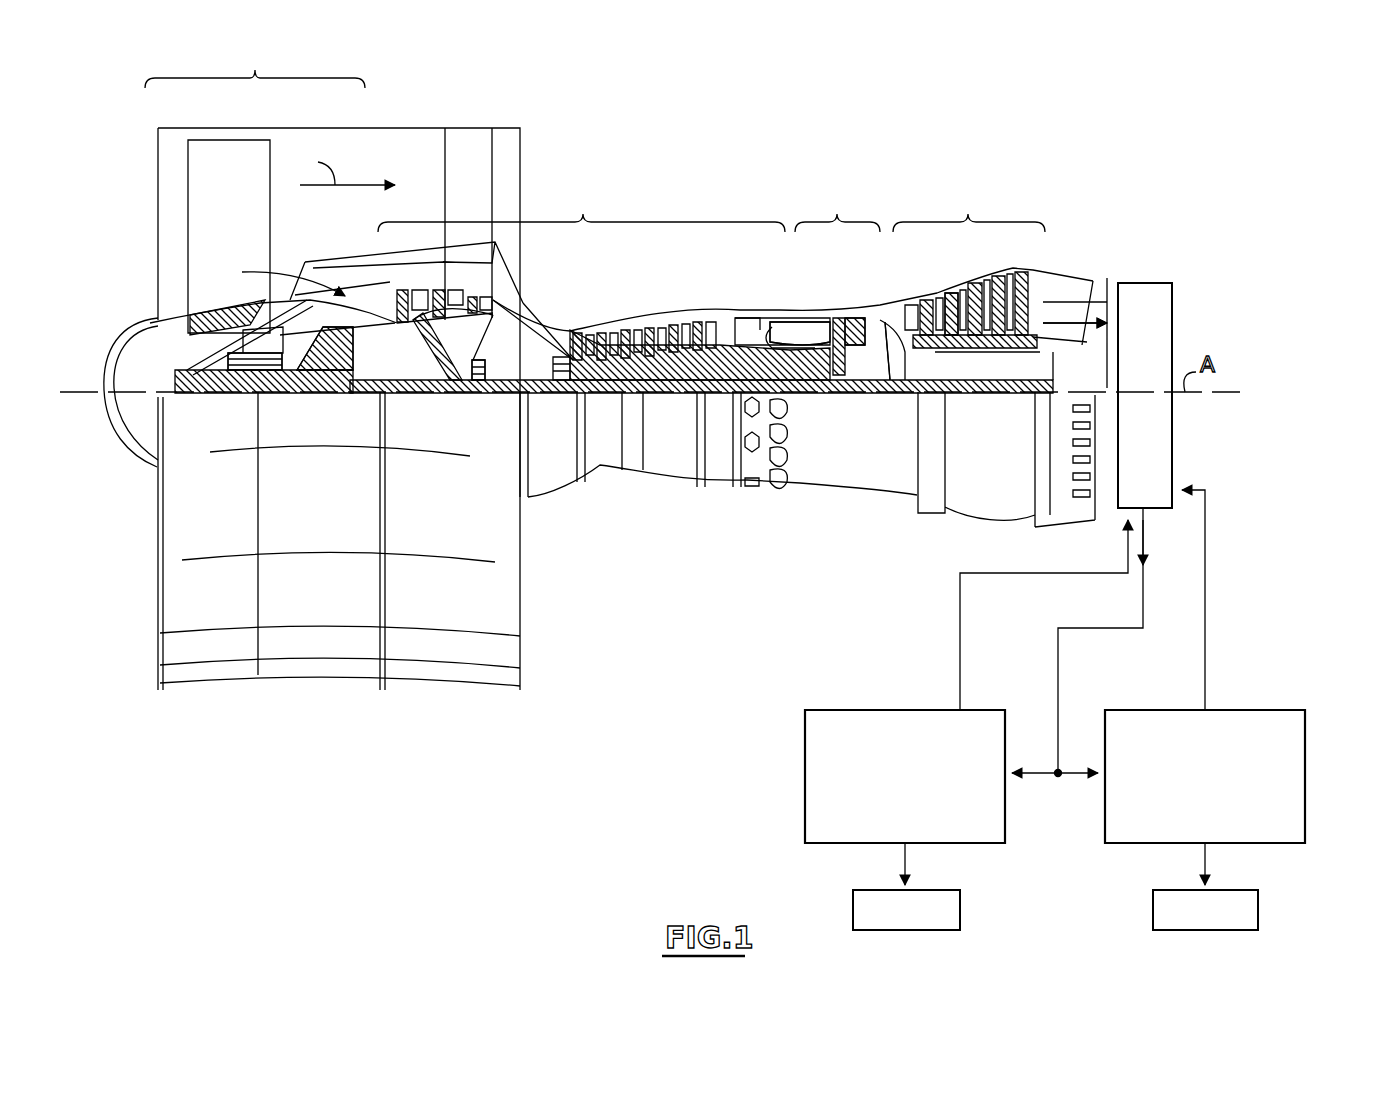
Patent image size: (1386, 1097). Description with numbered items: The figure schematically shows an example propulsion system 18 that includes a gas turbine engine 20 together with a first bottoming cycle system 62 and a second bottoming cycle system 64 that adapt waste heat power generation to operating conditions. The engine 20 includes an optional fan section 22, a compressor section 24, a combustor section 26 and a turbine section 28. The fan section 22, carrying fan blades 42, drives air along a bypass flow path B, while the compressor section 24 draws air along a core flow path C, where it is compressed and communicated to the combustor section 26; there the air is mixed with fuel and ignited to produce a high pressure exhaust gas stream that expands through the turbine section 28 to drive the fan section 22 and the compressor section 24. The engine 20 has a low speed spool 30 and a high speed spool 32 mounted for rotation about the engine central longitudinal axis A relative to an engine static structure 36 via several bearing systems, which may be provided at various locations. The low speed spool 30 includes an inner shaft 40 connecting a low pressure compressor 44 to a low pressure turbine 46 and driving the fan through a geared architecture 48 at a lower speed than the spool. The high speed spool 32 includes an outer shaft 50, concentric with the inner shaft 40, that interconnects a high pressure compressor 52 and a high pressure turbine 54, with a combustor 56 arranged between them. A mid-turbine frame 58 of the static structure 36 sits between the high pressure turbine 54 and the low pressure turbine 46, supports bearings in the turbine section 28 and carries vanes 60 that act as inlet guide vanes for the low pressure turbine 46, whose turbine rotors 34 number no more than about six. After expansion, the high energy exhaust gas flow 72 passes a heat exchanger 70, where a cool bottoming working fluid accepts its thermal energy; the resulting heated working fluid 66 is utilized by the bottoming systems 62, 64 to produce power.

The propulsion system 18 is at (525, 770).
The gas turbine engine 20 is at (800, 160).
The fan section 22 is at (255, 65).
The compressor section 24 is at (581, 209).
The combustor section 26 is at (837, 209).
The turbine section 28 is at (969, 209).
The low speed spool 30 is at (676, 400).
The high speed spool 32 is at (722, 345).
The turbine rotors 34 is at (1000, 370).
The engine static structure 36 is at (715, 482).
The inner shaft 40 is at (530, 420).
The fan blades 42 is at (240, 240).
The low pressure compressor section 44 is at (455, 290).
The low pressure turbine section 46 is at (990, 290).
The geared architecture 48 is at (345, 377).
The outer shaft 50 is at (800, 385).
The high pressure compressor section 52 is at (635, 330).
The high pressure turbine section 54 is at (860, 320).
The combustor 56 is at (785, 332).
The mid-turbine frame 58 is at (900, 305).
The vanes 60 is at (917, 353).
The first bottoming cycle system 62 is at (805, 770).
The second bottoming cycle system 64 is at (1305, 748).
The heated working fluid 66 is at (1060, 680).
The heat exchanger 70 is at (1153, 298).
The high energy exhaust gas flow 72 is at (1073, 288).